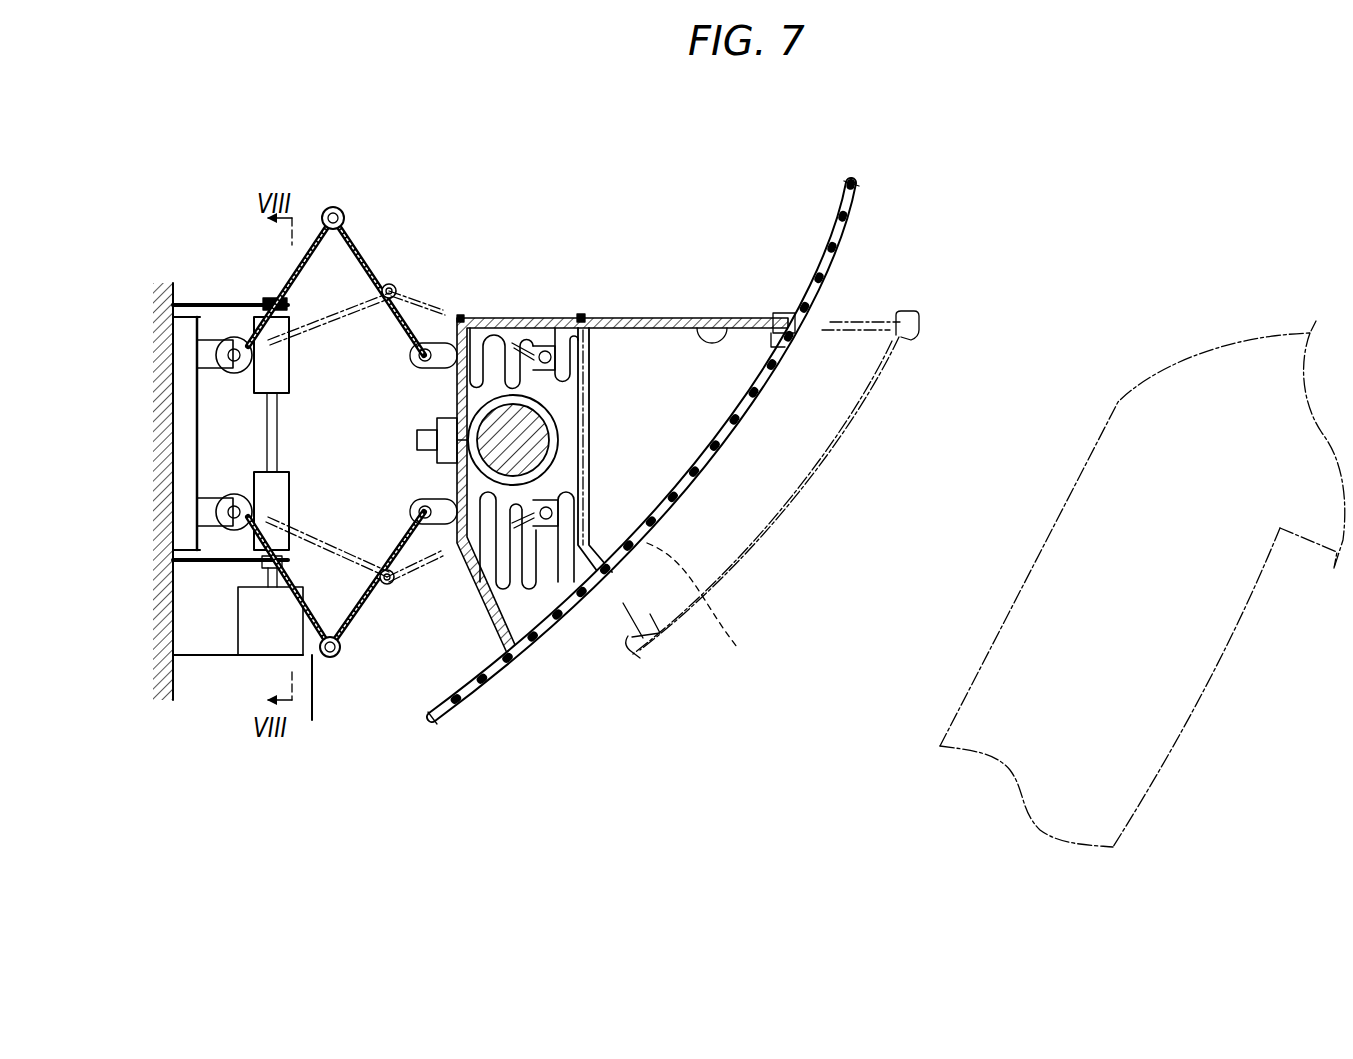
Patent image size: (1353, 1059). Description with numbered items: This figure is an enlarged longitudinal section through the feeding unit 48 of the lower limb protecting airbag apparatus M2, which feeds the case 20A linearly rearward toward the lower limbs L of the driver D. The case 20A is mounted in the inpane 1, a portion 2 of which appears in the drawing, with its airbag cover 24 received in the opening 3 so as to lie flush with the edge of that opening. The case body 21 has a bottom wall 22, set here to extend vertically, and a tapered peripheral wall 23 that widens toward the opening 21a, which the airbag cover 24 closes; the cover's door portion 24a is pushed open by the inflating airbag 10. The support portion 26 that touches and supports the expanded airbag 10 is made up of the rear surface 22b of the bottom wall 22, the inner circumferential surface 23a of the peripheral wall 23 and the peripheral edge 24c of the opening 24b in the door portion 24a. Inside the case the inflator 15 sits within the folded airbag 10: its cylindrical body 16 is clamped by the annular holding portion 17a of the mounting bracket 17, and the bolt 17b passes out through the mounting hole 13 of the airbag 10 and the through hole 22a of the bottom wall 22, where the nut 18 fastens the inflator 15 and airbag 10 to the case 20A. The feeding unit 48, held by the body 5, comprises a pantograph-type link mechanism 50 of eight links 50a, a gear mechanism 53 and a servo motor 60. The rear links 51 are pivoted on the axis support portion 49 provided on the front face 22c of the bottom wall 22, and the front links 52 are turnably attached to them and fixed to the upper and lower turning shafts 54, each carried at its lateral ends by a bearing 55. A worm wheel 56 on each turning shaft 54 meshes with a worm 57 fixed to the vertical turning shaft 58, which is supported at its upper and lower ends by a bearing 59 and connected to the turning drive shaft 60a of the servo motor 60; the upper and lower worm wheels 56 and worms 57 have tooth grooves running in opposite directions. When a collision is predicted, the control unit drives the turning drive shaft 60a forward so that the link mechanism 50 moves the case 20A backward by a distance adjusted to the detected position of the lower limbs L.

The inpane 1 is at (706, 444).
The cover 2 is at (706, 444).
The opening 3 is at (813, 302).
The body 5 is at (160, 672).
The airbag 10 is at (563, 433).
The mounting hole 13 is at (497, 345).
The inflator 15 is at (726, 481).
The body 16 is at (530, 460).
The mounting bracket 17 is at (706, 445).
The holding portion 17a is at (555, 445).
The bolt 17b is at (438, 423).
The nut 18 is at (407, 411).
The case 20A is at (462, 310).
The case body 21 is at (504, 698).
The opening 21a is at (532, 635).
The bottom wall 22 is at (565, 437).
The through hole 22a is at (425, 458).
The rear surface 22b is at (622, 442).
The front face 22c is at (480, 540).
The peripheral wall 23 is at (656, 318).
The inner circumferential surface 23a is at (730, 318).
The airbag cover 24 is at (738, 535).
The door portion 24a is at (598, 605).
The opening 24b is at (718, 606).
The peripheral edge 24c is at (833, 306).
The support portion 26 is at (739, 540).
The feeding unit 48 is at (308, 231).
The axis support portion 49 is at (393, 297).
The link mechanism 50 is at (336, 613).
The links 50a is at (335, 658).
The rear links 51 is at (355, 252).
The front links 52 is at (290, 290).
The gear mechanism 53 is at (300, 352).
The turning shaft 54 is at (233, 355).
The bearing 55 is at (225, 345).
The worm wheel 56 is at (200, 306).
The worm 57 is at (292, 382).
The turning shaft 58 is at (262, 432).
The bearing 59 is at (262, 304).
The servo motor 60 is at (312, 572).
The turning drive shaft 60a is at (283, 612).
The driver D is at (1268, 302).
The lower limbs L is at (1147, 734).
The lower limb protecting airbag apparatus M2 is at (650, 762).